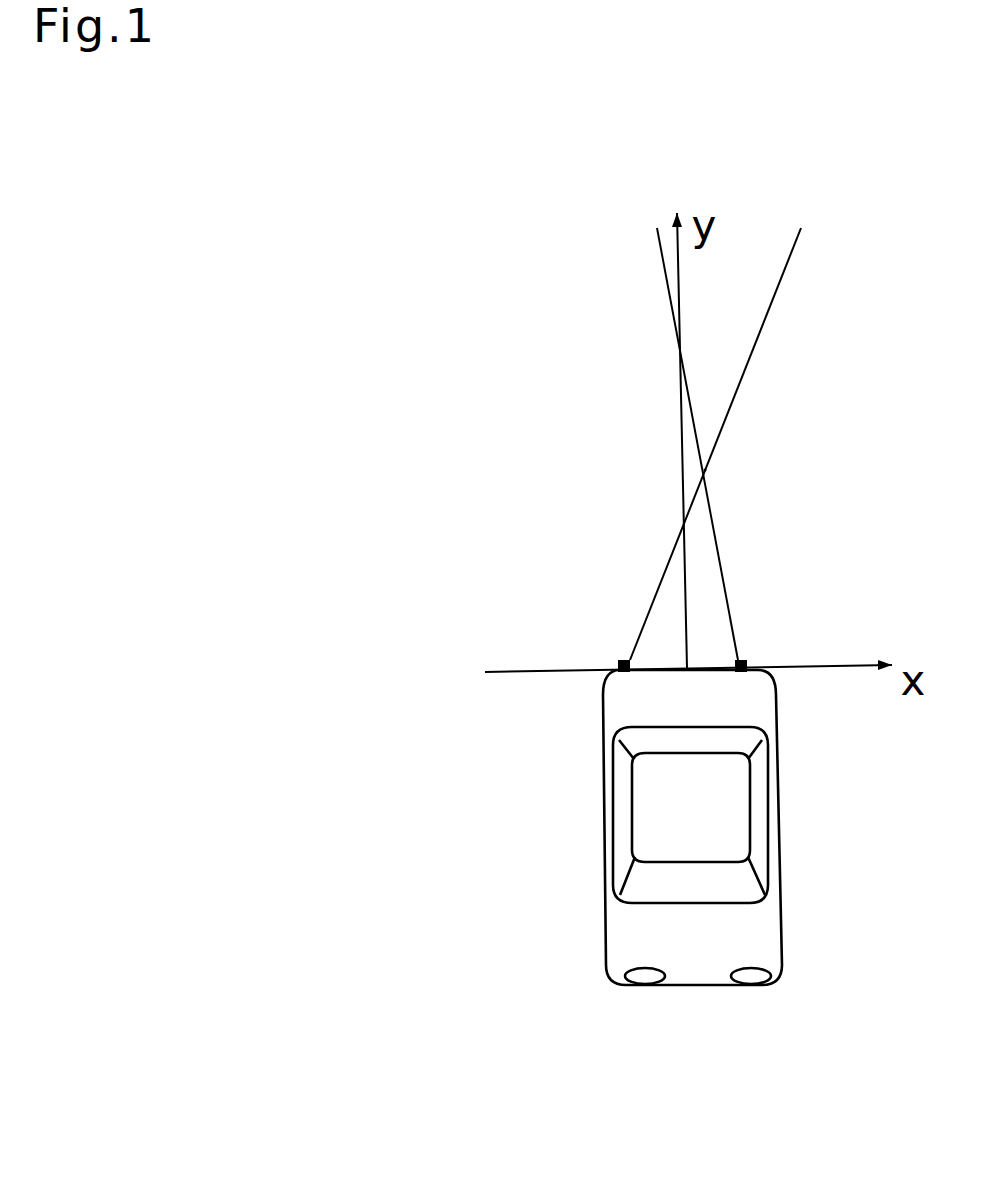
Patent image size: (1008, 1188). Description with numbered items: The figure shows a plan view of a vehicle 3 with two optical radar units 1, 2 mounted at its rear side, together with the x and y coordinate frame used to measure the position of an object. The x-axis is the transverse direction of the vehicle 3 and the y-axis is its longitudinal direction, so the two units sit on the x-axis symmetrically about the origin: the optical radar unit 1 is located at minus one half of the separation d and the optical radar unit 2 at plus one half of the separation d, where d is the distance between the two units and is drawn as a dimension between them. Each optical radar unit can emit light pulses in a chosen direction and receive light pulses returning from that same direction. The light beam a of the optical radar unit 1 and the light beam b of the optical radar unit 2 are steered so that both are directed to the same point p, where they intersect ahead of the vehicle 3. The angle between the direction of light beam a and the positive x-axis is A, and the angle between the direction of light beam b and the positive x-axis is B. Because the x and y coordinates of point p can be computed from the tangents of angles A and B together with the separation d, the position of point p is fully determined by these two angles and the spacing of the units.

The optical radar unit 1 is at (603, 710).
The optical radar unit 2 is at (772, 705).
The vehicle 3 is at (762, 930).
The light beam a is at (658, 578).
The light beam b is at (728, 578).
The point p is at (705, 470).
The angle A is at (632, 659).
The angle B is at (750, 658).
The separation d is at (627, 678).